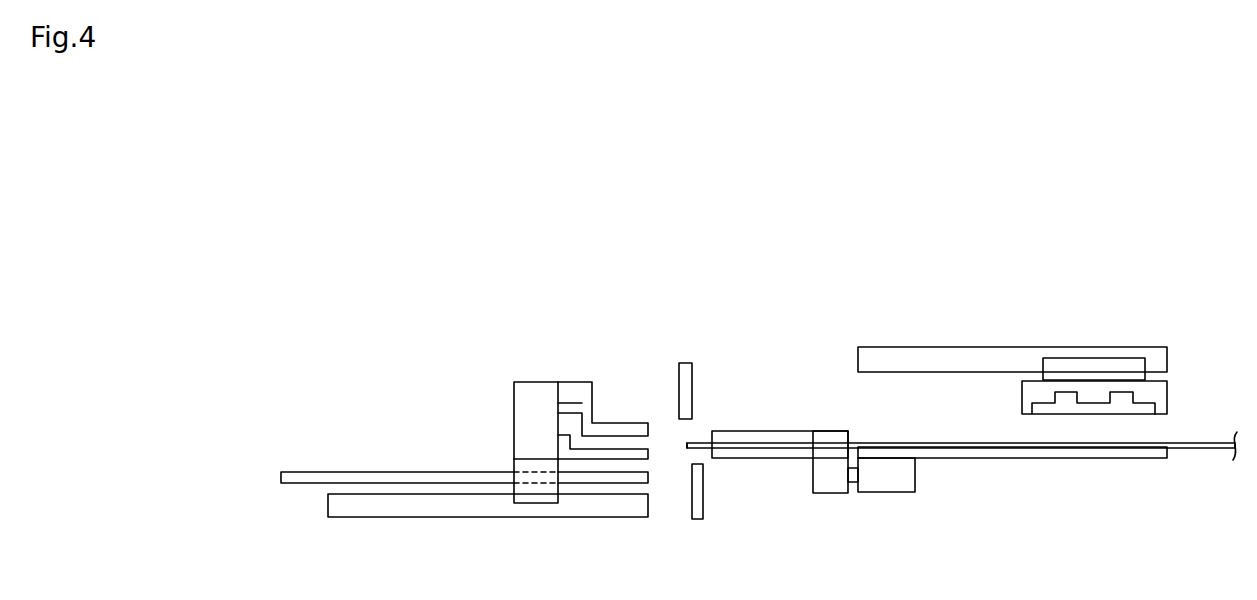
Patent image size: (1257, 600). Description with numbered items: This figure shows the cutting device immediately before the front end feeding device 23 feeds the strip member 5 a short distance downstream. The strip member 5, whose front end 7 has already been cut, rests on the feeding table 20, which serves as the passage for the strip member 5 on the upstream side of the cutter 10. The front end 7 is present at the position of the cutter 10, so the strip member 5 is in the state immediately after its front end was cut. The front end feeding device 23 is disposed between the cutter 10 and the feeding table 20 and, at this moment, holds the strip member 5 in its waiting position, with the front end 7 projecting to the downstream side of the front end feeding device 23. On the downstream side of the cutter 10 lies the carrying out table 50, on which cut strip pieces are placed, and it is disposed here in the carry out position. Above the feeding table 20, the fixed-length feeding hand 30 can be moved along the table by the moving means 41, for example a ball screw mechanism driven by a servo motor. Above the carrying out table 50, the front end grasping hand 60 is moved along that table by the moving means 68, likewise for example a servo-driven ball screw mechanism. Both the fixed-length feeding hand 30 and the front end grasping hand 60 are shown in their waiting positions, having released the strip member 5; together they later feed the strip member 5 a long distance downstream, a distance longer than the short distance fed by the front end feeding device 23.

The strip member 5 is at (1202, 448).
The front end 7 is at (686, 446).
The cutter 10 is at (700, 510).
The feeding table 20 is at (1125, 453).
The front end feeding device 23 is at (734, 433).
The fixed-length feeding hand 30 is at (1122, 406).
The moving means 41 is at (977, 358).
The carrying out table 50 is at (290, 480).
The front end grasping hand 60 is at (613, 430).
The moving means 68 is at (492, 507).